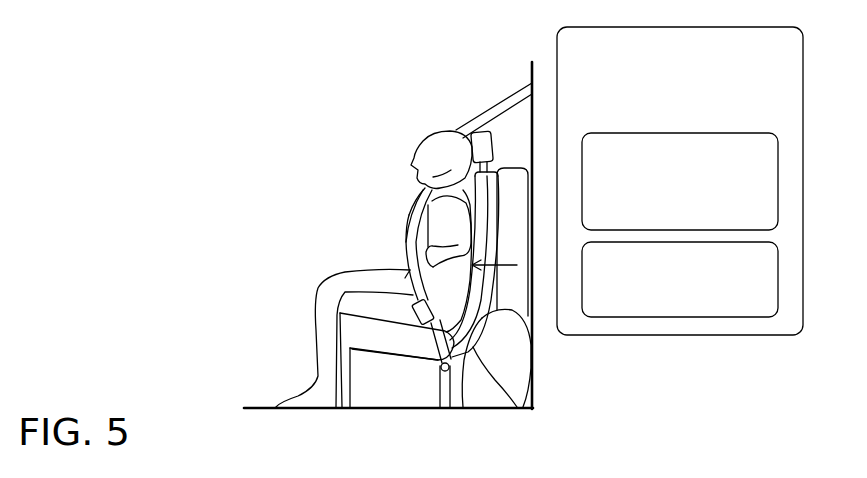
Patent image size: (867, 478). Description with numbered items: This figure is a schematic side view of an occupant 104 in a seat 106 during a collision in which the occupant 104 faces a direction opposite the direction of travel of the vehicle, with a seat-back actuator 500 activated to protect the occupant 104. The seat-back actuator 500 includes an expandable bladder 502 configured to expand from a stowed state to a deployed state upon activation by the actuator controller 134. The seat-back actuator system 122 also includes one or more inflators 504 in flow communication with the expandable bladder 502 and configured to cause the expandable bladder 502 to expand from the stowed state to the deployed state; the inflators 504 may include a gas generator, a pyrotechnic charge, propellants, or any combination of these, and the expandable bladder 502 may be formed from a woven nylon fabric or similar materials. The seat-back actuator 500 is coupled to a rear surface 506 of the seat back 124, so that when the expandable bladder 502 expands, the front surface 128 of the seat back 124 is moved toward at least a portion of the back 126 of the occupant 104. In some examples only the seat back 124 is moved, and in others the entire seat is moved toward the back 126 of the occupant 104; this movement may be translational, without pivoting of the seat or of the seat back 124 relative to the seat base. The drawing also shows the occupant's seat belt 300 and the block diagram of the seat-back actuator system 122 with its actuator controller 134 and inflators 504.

The occupant 104 is at (432, 150).
The seat back 124 is at (483, 140).
The seat 106 is at (398, 333).
The seat belt 300 is at (413, 197).
The front surface 128 is at (417, 215).
The back 126 is at (407, 245).
The seat-back actuator 500 is at (515, 192).
The expandable bladder 502 is at (513, 373).
The rear surface 506 is at (531, 336).
The seat-back actuator system 122 is at (660, 116).
The actuator controller 134 is at (660, 222).
The inflators 504 is at (507, 292).